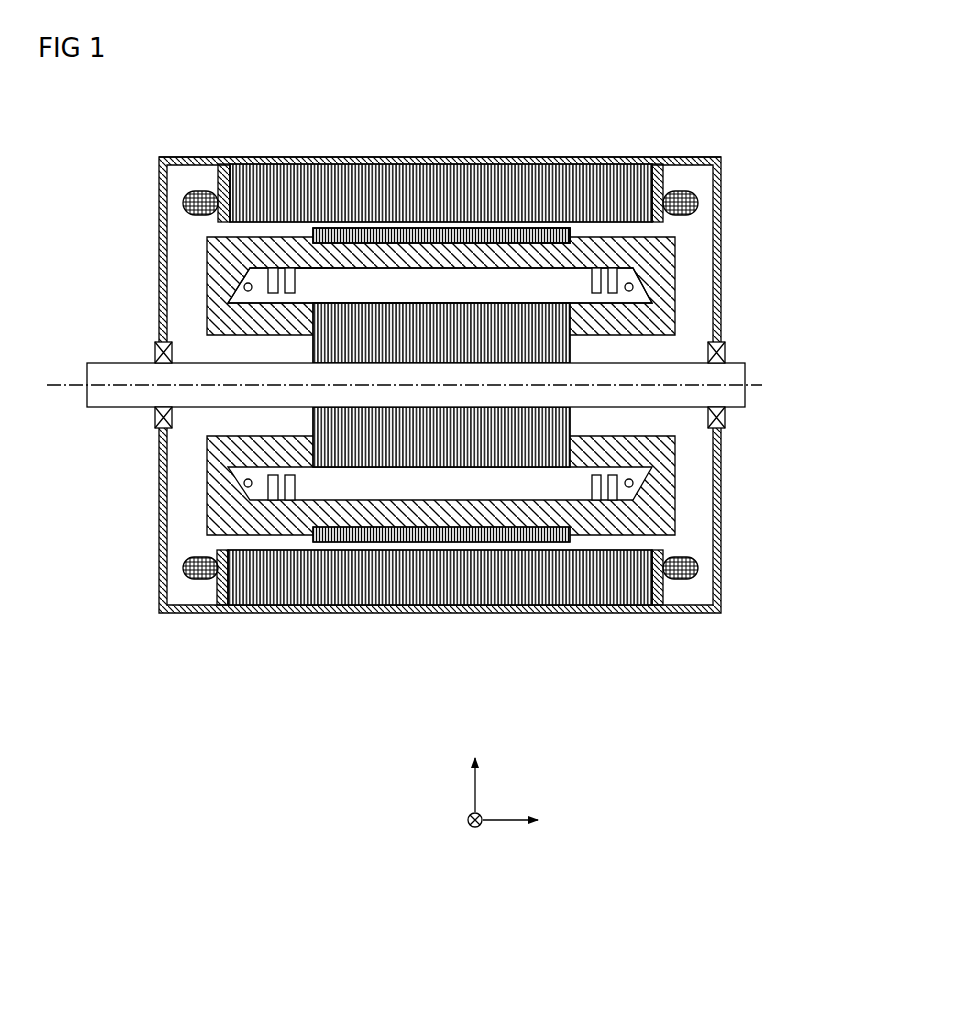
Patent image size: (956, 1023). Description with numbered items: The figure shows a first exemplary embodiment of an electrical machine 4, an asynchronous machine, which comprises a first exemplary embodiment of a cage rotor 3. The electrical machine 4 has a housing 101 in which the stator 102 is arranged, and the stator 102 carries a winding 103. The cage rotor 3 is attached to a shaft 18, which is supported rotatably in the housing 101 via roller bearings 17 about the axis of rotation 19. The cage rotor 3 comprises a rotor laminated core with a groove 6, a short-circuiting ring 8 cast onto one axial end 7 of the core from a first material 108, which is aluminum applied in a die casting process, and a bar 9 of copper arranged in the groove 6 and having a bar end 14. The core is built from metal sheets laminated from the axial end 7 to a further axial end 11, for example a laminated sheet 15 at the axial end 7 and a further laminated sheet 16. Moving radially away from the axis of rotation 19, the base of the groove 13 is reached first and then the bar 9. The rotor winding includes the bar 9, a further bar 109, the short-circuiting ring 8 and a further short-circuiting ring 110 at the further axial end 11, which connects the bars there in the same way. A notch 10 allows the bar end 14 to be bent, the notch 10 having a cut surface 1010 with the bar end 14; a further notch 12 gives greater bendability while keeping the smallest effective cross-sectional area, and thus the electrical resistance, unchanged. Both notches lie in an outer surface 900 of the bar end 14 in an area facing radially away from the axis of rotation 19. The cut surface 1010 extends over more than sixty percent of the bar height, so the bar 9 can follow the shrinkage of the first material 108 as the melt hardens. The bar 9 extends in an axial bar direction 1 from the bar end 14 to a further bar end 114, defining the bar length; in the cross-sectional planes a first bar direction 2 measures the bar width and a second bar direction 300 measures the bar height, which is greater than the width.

The axial bar direction 1 is at (497, 822).
The first bar direction 2 is at (466, 822).
The second bar direction 300 is at (475, 798).
The cage rotor 3 is at (193, 232).
The electrical machine 4 is at (703, 104).
The groove 6 is at (353, 233).
The axial end 7 is at (300, 262).
The short-circuiting ring 8 is at (217, 320).
The bar 9 is at (444, 290).
The notch 10 is at (270, 268).
The further axial end 11 is at (567, 225).
The further notch 12 is at (290, 268).
The base of the groove 13 is at (403, 300).
The bar end 14 is at (255, 262).
The laminated sheet 15 is at (318, 418).
The further laminated sheet 16 is at (313, 424).
The roller bearings 17 is at (155, 353).
The shaft 18 is at (95, 397).
The axis of rotation 19 is at (58, 384).
The housing 101 is at (163, 172).
The stator 102 is at (192, 590).
The winding 103 is at (205, 575).
The first material 108 is at (640, 250).
The further bar 109 is at (441, 580).
The further short-circuiting ring 110 is at (645, 449).
The further bar end 114 is at (618, 260).
The outer surface 900 is at (313, 218).
The cut surface 1010 is at (264, 287).